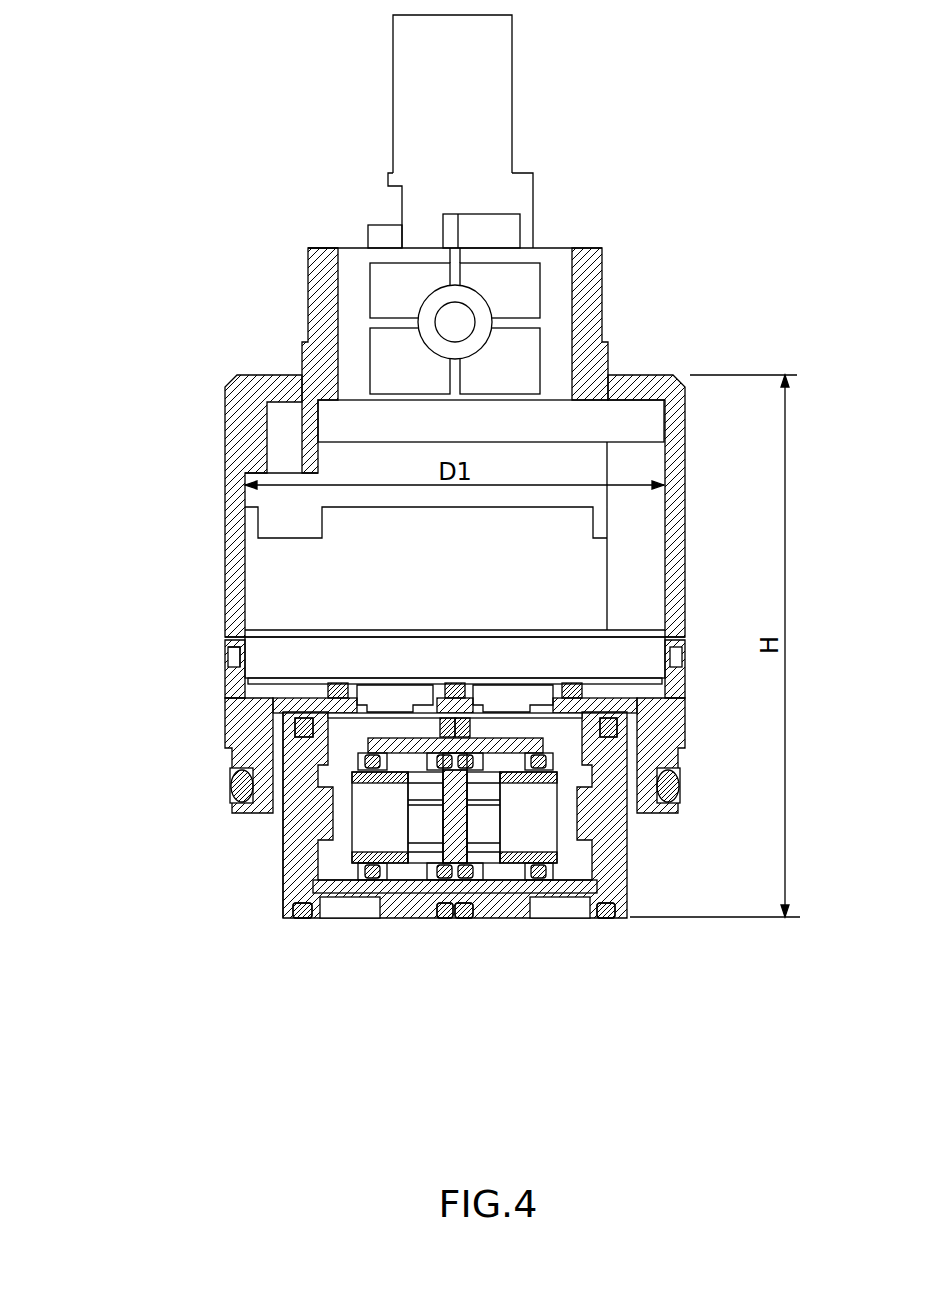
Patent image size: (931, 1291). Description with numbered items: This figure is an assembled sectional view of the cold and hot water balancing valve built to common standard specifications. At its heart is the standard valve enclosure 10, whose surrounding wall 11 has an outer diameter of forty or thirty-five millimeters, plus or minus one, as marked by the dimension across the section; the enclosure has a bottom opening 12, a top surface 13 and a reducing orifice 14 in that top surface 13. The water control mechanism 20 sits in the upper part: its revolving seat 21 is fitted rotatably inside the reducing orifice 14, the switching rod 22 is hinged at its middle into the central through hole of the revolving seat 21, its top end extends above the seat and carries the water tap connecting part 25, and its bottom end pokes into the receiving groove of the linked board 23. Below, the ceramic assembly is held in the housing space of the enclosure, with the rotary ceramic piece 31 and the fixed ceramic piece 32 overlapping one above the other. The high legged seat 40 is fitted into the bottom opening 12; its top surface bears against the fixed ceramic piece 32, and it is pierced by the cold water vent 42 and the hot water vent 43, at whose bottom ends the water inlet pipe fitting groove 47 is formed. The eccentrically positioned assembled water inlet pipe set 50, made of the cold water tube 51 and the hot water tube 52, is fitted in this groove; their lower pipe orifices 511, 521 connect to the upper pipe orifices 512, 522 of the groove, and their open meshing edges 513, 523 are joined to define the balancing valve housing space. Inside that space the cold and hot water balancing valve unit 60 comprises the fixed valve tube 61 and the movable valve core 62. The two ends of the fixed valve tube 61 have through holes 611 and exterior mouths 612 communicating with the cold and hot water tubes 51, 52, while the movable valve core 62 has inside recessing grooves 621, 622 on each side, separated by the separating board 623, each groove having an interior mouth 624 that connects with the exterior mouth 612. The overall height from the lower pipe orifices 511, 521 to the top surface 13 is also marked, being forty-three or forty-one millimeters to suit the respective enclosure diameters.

The standard valve enclosure 10 is at (245, 500).
The surrounding wall 11 is at (225, 443).
The bottom opening 12 is at (233, 722).
The top surface 13 is at (262, 373).
The reducing orifice 14 is at (323, 247).
The water control mechanism 20 is at (529, 244).
The revolving seat 21 is at (558, 311).
The switching rod 22 is at (518, 193).
The linked board 23 is at (562, 463).
The water tap connecting part 25 is at (503, 105).
The rotary ceramic piece 31 is at (260, 578).
The fixed ceramic piece 32 is at (260, 637).
The high legged seat 40 is at (225, 738).
The cold water vent 42 is at (507, 707).
The hot water vent 43 is at (382, 707).
The water inlet pipe fitting groove 47 is at (605, 782).
The assembled water inlet pipe set 50 is at (437, 867).
The cold water tube 51 is at (613, 865).
The hot water tube 52 is at (292, 860).
The cold and hot water balancing valve unit 60 is at (372, 875).
The fixed valve tube 61 is at (572, 880).
The movable valve core 62 is at (397, 887).
The lower pipe orifice 511 is at (593, 920).
The upper pipe orifice 512 is at (572, 697).
The meshing edge 513 is at (447, 923).
The lower pipe orifice 521 is at (317, 920).
The upper pipe orifice 522 is at (240, 668).
The meshing edge 523 is at (452, 962).
The through hole 611 is at (360, 893).
The exterior mouth 612 is at (410, 887).
The inside recessing groove 621 is at (380, 817).
The inside recessing groove 622 is at (528, 817).
The separating board 623 is at (423, 880).
The interior mouth 624 is at (498, 880).